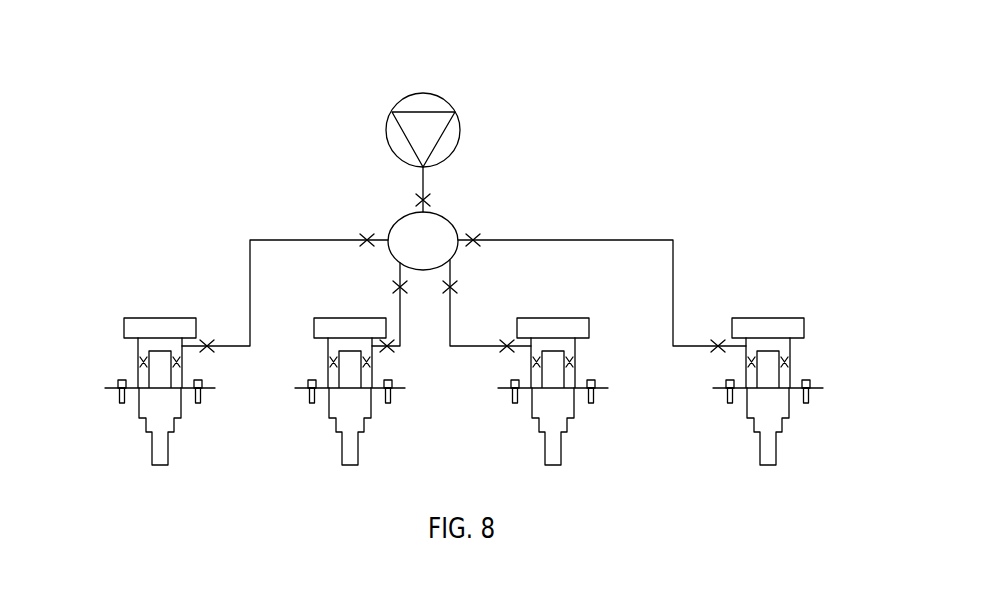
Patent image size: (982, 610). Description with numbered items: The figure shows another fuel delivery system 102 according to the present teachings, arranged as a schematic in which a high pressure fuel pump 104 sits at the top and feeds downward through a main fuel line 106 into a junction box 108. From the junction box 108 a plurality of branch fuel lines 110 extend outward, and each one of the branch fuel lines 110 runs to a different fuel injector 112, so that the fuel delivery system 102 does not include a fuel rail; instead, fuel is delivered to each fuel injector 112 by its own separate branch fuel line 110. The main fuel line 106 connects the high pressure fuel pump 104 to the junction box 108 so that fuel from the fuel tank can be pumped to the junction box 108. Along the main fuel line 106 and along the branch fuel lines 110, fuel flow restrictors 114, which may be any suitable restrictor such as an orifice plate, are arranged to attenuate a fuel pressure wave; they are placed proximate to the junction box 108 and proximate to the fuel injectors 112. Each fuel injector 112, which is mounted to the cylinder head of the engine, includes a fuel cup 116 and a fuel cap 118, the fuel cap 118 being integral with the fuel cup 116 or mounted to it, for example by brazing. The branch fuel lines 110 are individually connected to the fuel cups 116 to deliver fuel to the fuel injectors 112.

The fuel delivery system 102 is at (206, 126).
The high pressure fuel pump 104 is at (432, 106).
The main fuel line 106 is at (430, 182).
The junction box 108 is at (441, 225).
The branch fuel lines 110 is at (245, 272).
The fuel injectors 112 is at (159, 465).
The fuel flow restrictors 114 is at (417, 200).
The fuel cup 116 is at (146, 351).
The fuel cap 118 is at (158, 317).